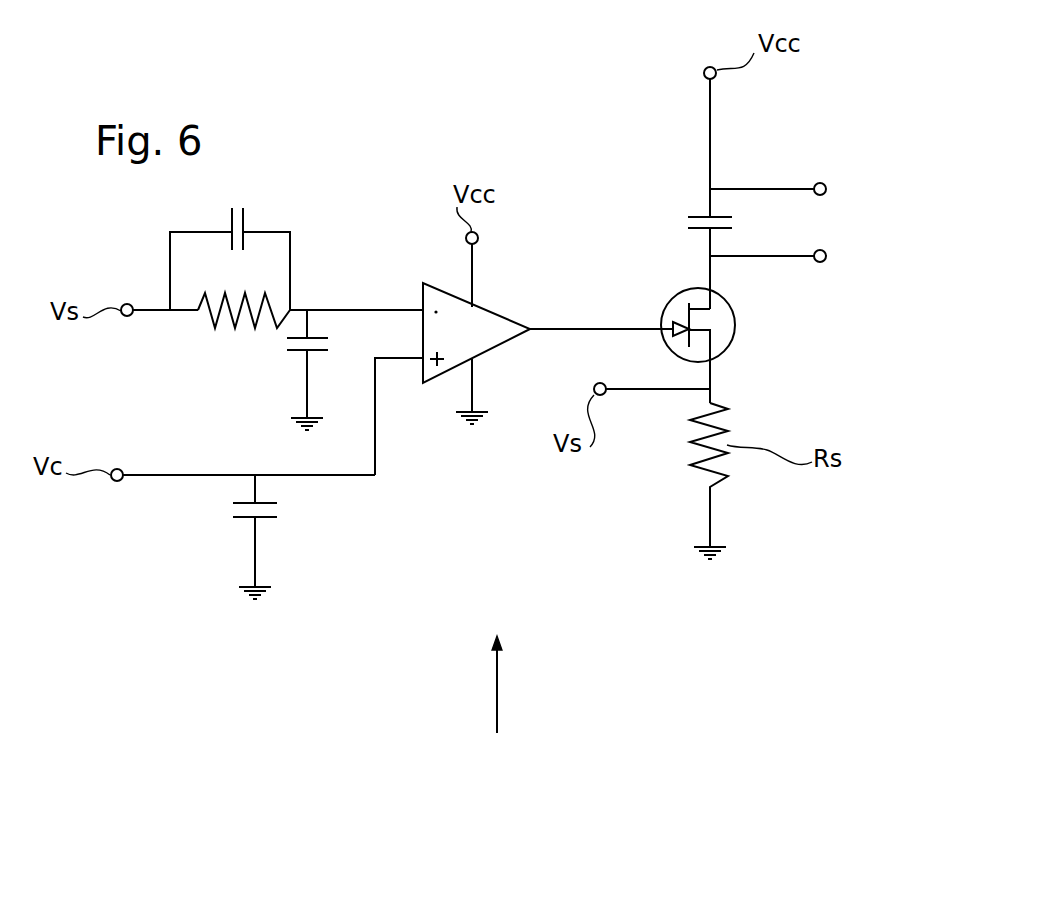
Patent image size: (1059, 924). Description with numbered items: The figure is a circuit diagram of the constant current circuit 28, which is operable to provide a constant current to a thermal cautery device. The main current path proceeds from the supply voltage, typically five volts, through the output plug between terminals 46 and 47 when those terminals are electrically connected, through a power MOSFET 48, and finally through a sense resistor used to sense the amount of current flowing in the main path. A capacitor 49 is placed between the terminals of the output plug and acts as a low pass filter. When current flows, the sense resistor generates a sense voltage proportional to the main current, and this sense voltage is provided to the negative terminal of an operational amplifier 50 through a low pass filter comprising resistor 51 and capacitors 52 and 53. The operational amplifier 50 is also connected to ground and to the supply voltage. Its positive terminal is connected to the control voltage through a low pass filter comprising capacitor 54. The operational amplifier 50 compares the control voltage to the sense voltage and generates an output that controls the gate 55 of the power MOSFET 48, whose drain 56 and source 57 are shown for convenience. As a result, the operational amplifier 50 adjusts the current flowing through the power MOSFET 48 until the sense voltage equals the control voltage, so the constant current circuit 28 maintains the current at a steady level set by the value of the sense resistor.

The constant current circuit 28 is at (499, 701).
The terminal 46 is at (826, 189).
The terminal 47 is at (821, 262).
The power MOSFET 48 is at (736, 323).
The capacitor 49 is at (699, 216).
The operational amplifier 50 is at (480, 342).
The resistor 51 is at (233, 329).
The capacitor 52 is at (247, 220).
The capacitor 53 is at (322, 334).
The capacitor 54 is at (267, 518).
The gate 55 is at (668, 322).
The drain 56 is at (700, 288).
The source 57 is at (693, 355).